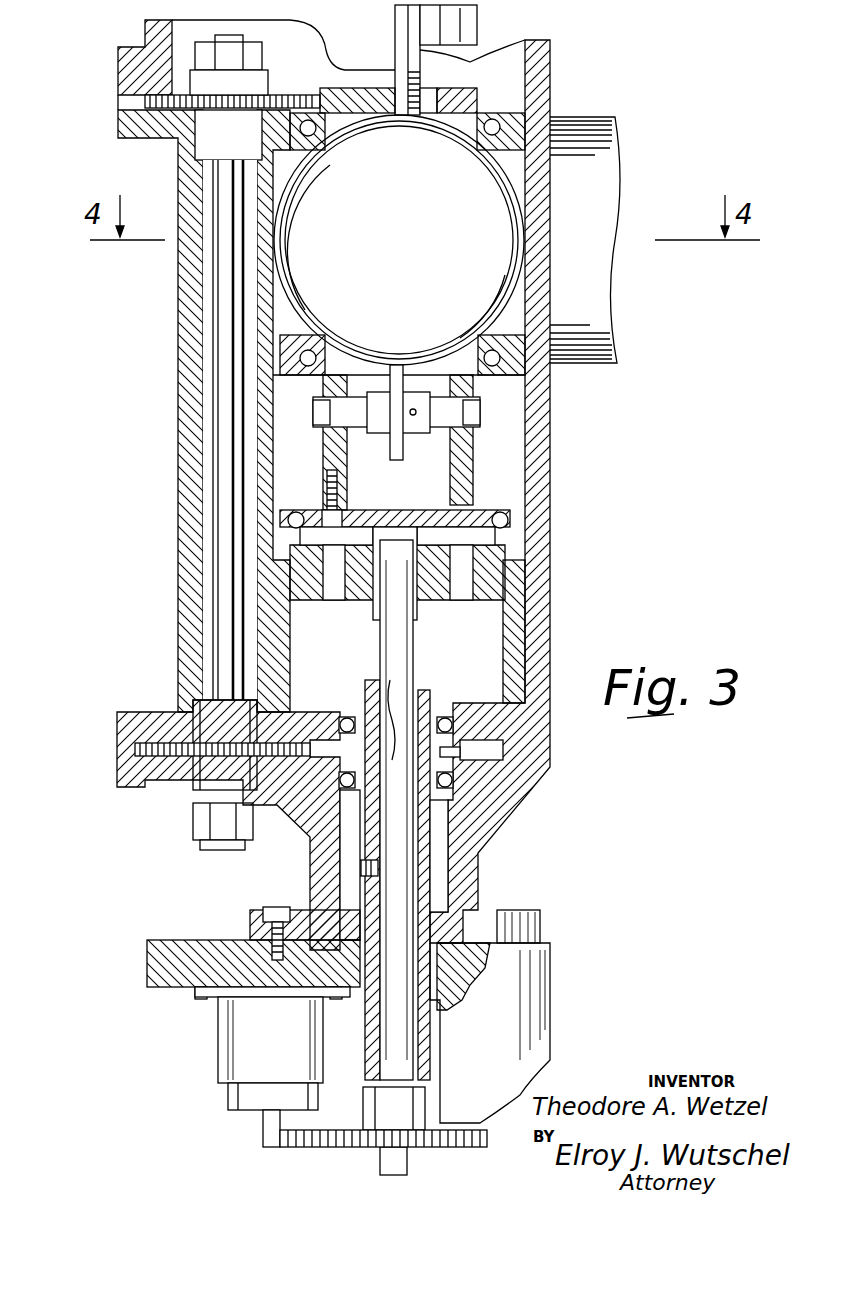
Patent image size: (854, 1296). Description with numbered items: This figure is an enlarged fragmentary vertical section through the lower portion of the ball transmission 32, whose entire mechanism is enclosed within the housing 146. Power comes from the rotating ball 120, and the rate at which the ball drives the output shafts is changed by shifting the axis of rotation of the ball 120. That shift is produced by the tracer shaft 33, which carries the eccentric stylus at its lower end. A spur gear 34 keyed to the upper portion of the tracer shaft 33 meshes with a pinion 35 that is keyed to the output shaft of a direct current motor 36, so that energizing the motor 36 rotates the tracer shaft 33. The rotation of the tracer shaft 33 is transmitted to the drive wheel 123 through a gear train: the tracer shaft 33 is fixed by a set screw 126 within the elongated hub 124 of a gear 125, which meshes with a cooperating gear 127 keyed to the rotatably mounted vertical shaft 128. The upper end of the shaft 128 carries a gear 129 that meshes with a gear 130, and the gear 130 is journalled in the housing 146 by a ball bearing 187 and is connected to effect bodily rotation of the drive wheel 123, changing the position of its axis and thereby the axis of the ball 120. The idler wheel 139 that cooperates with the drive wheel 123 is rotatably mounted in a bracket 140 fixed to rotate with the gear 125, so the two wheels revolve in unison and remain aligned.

The ball transmission 32 is at (172, 352).
The tracer shaft 33 is at (397, 873).
The spur gear 34 is at (312, 1142).
The pinion 35 is at (262, 1125).
The direct current motor 36 is at (240, 1046).
The ball 120 is at (490, 235).
The drive wheel 123 is at (395, 37).
The elongated hub 124 is at (367, 833).
The gear 125 is at (485, 757).
The set screw 126 is at (355, 866).
The cooperating gear 127 is at (135, 750).
The vertical shaft 128 is at (232, 440).
The gear 129 is at (145, 100).
The gear 130 is at (497, 95).
The idler wheel 139 is at (405, 447).
The bracket 140 is at (345, 462).
The housing 146 is at (535, 437).
The ball bearing 187 is at (498, 124).